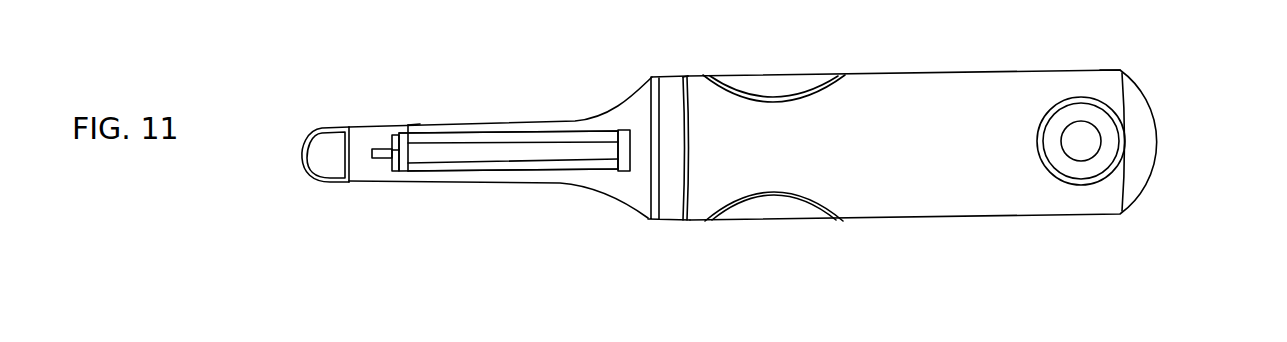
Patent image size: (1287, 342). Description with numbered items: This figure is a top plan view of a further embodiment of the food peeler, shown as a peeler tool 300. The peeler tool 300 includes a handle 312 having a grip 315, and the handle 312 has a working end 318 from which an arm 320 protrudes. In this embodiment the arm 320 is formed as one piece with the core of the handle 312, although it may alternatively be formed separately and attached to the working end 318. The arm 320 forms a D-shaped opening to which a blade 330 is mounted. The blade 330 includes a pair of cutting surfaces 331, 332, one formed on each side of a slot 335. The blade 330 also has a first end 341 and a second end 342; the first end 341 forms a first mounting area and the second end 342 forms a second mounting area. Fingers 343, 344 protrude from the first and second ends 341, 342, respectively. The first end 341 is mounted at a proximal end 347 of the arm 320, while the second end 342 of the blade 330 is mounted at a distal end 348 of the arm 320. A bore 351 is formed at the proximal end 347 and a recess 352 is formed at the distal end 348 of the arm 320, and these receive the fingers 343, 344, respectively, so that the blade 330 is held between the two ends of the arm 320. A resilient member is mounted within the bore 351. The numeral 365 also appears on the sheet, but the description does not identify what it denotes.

The peeler tool 300 is at (1224, 96).
The handle 312 is at (990, 92).
The grip 315 is at (924, 83).
The working end 318 is at (684, 92).
The arm 320 is at (392, 173).
The blade 330 is at (512, 131).
The cutting surface 331 is at (550, 133).
The cutting surface 332 is at (522, 168).
The slot 335 is at (478, 152).
The first end 341 is at (632, 155).
The second end 342 is at (396, 143).
The finger 343 is at (647, 143).
The finger 344 is at (390, 148).
The proximal end 347 is at (645, 170).
The distal end 348 is at (328, 183).
The bore 351 is at (774, 135).
The recess 352 is at (372, 158).
The spring 365 is at (390, 62).